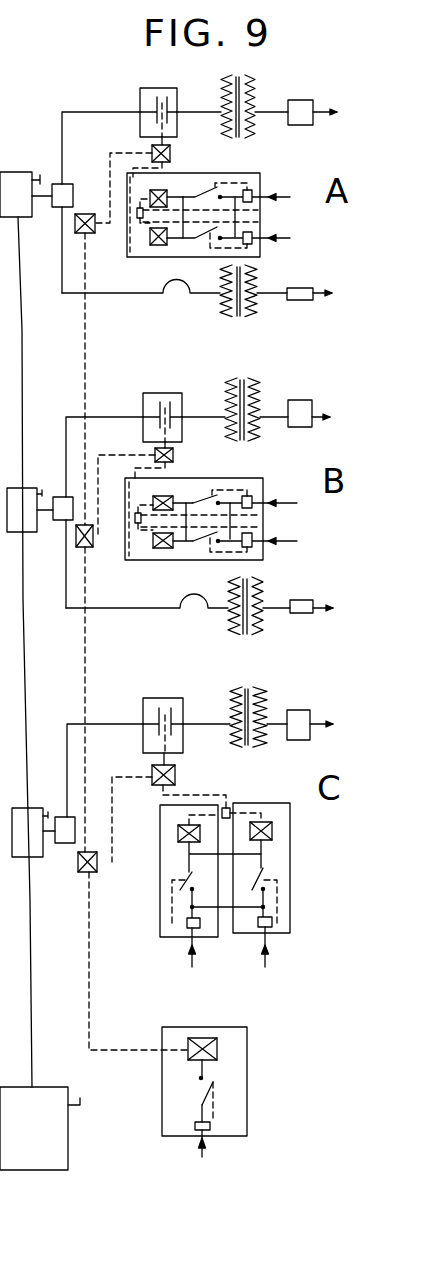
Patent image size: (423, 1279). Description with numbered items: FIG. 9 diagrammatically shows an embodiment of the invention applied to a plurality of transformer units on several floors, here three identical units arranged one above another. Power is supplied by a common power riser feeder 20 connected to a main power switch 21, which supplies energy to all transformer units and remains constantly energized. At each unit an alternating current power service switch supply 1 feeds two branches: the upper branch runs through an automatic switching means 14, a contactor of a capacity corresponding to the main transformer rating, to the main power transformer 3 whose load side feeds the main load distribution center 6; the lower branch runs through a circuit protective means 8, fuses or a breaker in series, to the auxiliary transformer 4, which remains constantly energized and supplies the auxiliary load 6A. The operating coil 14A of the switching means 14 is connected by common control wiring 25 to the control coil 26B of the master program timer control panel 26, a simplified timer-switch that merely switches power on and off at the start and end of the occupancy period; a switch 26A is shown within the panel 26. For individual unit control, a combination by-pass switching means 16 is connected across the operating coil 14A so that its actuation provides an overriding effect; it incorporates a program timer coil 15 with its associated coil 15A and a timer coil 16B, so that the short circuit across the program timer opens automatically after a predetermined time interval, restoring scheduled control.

The alternating current power service switch supply 1 is at (20, 172).
The main power transformer 3 is at (247, 87).
The auxiliary transformer 4 is at (250, 453).
The main load distribution center 6 is at (315, 110).
The auxiliary load 6A is at (300, 293).
The circuit protective means 8 is at (145, 454).
The automatic switching means 14 is at (173, 88).
The operating coil 14A is at (168, 165).
The program timer switch coil 15 is at (253, 190).
The relay coil 15A is at (292, 833).
The by-pass switching means 16 is at (255, 230).
The coil 16B is at (163, 247).
The common power riser feeder 20 is at (32, 973).
The main power switch 21 is at (65, 1147).
The common control wiring 25 is at (90, 987).
The master program timer control panel 26 is at (242, 1120).
The relay switch 26A is at (200, 1100).
The control coil 26B is at (217, 1043).